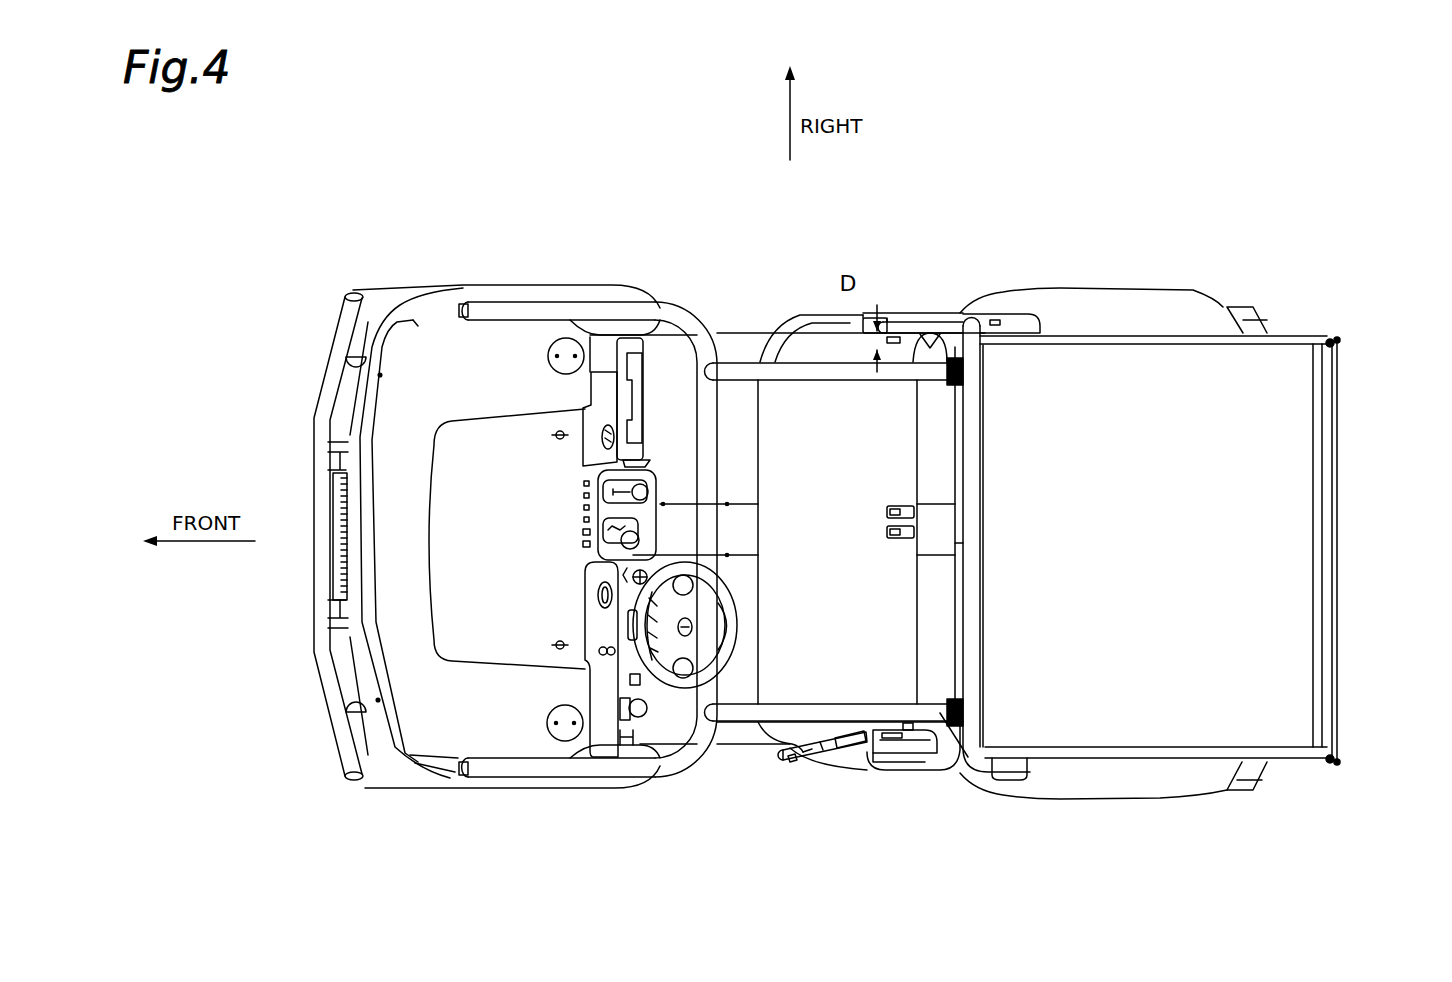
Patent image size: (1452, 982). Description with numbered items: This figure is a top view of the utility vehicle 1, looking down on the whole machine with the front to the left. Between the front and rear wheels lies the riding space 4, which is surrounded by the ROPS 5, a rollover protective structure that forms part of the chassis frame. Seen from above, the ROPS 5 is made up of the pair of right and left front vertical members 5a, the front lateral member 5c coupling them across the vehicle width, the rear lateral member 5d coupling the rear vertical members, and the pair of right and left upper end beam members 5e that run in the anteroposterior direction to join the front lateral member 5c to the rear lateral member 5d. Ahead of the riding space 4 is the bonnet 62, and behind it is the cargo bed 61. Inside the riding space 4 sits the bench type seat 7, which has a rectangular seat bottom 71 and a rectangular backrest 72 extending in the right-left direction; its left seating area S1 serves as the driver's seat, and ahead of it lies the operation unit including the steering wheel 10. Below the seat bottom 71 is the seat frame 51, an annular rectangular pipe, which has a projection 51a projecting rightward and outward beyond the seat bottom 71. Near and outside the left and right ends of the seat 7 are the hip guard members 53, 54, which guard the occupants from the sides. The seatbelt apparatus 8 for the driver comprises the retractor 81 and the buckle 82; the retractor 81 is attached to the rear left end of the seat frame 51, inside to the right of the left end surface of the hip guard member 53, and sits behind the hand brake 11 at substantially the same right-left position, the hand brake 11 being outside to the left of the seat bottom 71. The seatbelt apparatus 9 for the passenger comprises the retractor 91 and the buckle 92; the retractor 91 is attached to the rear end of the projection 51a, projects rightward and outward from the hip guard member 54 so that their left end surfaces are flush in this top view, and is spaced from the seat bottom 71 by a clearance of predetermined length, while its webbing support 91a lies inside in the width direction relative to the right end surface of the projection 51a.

The utility vehicle 1 is at (1310, 242).
The riding space 4 is at (832, 427).
The ROPS 5 is at (672, 280).
The front vertical members 5a is at (568, 304).
The front lateral member 5c is at (731, 695).
The rear lateral member 5d is at (968, 635).
The upper end beam members 5e is at (733, 362).
The seat 7 is at (762, 736).
The seatbelt apparatus for the driver 8 is at (910, 786).
The seatbelt apparatus for the passenger 9 is at (912, 300).
The steering wheel 10 is at (670, 687).
The hand brake 11 is at (786, 764).
The seat frame 51 is at (779, 313).
The projection 51a is at (805, 330).
The hip guard member 53 is at (922, 760).
The hip guard member 54 is at (937, 312).
The cargo bed 61 is at (1270, 553).
The bonnet 62 is at (443, 712).
The seat bottom 71 is at (817, 683).
The backrest 72 is at (937, 665).
The retractor 81 is at (893, 745).
The buckle 82 is at (915, 533).
The retractor 91 is at (892, 322).
The webbing support 91a is at (866, 316).
The buckle 92 is at (915, 512).
The left seating area S1 is at (850, 662).